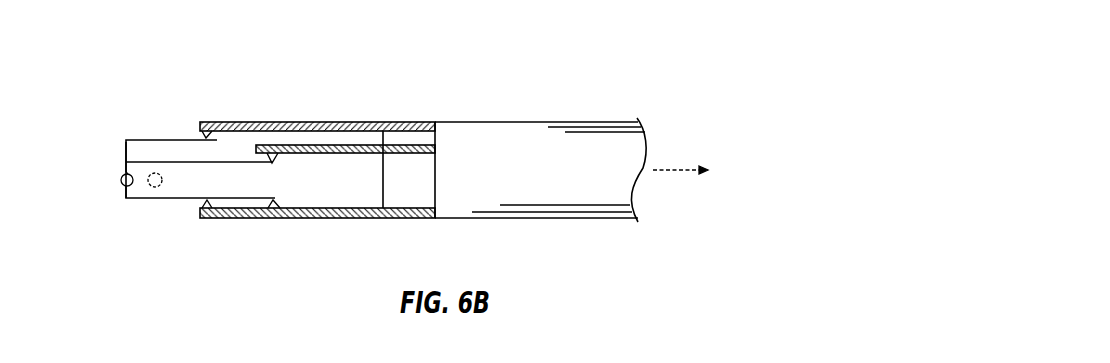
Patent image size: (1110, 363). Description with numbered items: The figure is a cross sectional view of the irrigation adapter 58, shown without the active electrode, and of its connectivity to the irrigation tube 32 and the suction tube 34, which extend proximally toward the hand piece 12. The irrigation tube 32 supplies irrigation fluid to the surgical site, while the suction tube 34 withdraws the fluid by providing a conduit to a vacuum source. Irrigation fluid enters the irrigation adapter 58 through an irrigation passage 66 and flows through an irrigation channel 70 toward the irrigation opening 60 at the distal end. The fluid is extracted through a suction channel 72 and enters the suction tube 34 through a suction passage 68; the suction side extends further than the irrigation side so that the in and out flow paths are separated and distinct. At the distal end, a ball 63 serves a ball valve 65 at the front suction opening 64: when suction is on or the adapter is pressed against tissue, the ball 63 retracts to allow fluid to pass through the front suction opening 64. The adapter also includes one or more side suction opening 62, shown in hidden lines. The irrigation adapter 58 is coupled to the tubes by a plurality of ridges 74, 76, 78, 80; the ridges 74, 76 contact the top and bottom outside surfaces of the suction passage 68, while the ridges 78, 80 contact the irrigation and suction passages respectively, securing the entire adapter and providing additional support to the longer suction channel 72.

The hand piece 12 is at (765, 184).
The irrigation tube 32 is at (410, 132).
The suction tube 34 is at (409, 200).
The irrigation adapter 58 is at (164, 139).
The irrigation opening 60 is at (126, 150).
The side suction opening 62 is at (153, 188).
The ball 63 is at (127, 175).
The front suction opening 64 is at (121, 180).
The ball valve 65 is at (127, 199).
The irrigation passage 66 is at (333, 132).
The suction passage 68 is at (342, 200).
The irrigation channel 70 is at (187, 146).
The suction channel 72 is at (178, 192).
The ridge 74 is at (273, 157).
The ridge 76 is at (273, 205).
The ridge 78 is at (203, 137).
The ridge 80 is at (204, 203).